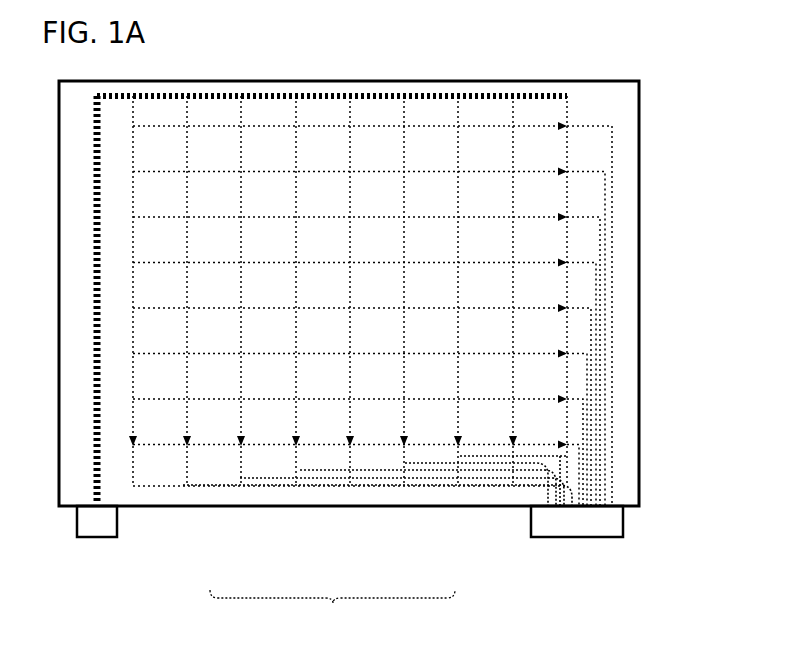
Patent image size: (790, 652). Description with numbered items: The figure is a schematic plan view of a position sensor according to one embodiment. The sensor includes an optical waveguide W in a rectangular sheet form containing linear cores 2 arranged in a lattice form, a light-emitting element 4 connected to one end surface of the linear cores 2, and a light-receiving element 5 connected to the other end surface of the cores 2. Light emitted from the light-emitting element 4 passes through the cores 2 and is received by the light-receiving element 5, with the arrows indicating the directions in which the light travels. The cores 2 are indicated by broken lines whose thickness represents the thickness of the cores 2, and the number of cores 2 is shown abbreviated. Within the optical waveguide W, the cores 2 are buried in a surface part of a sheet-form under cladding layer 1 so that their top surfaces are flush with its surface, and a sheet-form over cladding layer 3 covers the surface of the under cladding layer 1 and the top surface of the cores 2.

The under cladding layer 1 is at (205, 510).
The linear cores 2 is at (110, 410).
The over cladding layer 3 is at (438, 500).
The light-emitting element 4 is at (96, 522).
The light-receiving element 5 is at (586, 520).
The optical waveguide W is at (332, 617).